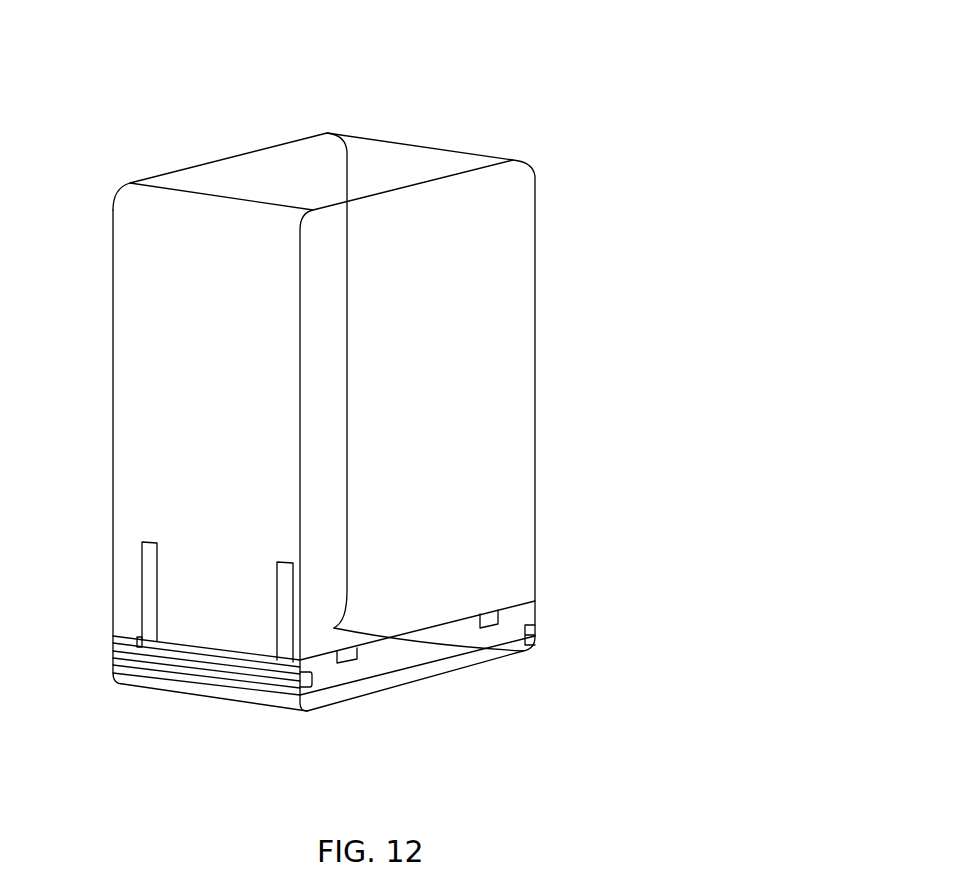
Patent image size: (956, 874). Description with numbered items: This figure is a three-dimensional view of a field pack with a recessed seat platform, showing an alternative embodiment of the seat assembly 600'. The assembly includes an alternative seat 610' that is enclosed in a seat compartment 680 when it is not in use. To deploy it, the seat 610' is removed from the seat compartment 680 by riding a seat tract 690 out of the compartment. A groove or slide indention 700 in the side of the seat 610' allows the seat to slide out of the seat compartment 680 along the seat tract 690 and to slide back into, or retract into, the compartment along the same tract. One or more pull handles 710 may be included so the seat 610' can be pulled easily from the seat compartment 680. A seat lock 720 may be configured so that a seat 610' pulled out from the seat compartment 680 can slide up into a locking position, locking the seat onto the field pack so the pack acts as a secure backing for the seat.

The seat assembly 600' is at (359, 359).
The seat 610' is at (531, 700).
The seat compartment 680 is at (427, 672).
The seat tract 690 is at (185, 650).
The slide indention 700 is at (114, 637).
The pull handle 710 is at (300, 638).
The seat lock 720 is at (296, 590).